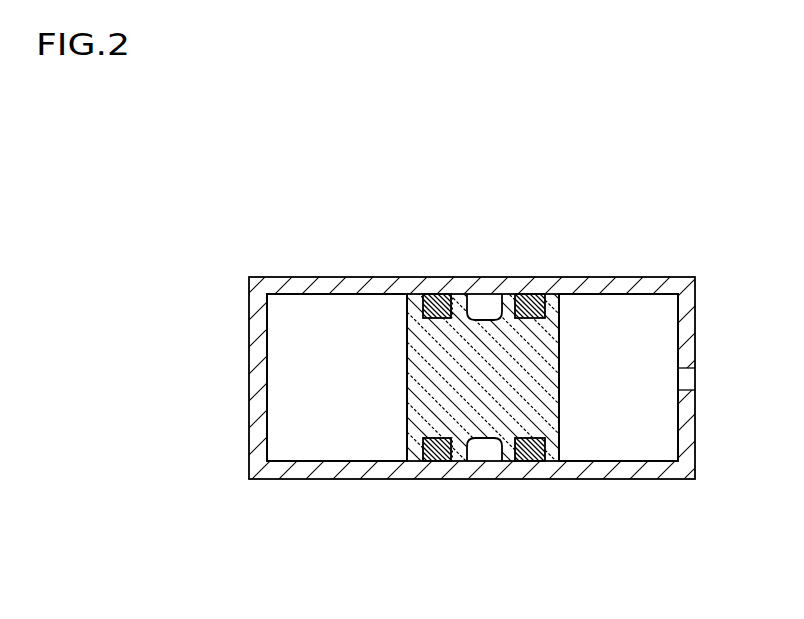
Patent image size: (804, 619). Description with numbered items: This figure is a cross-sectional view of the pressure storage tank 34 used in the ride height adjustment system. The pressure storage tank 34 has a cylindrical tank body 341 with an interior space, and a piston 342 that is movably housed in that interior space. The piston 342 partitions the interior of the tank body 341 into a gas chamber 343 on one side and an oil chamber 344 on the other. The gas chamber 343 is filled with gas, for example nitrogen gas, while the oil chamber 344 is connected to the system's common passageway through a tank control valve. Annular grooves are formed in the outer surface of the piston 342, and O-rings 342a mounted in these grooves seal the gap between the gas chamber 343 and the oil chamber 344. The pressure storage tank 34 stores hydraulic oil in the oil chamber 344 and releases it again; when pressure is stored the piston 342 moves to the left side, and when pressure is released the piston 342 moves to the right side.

The pressure storage tank 34 is at (509, 207).
The tank body 341 is at (448, 286).
The piston 342 is at (537, 360).
The O-rings 342a is at (433, 455).
The gas chamber 343 is at (337, 325).
The oil chamber 344 is at (638, 325).